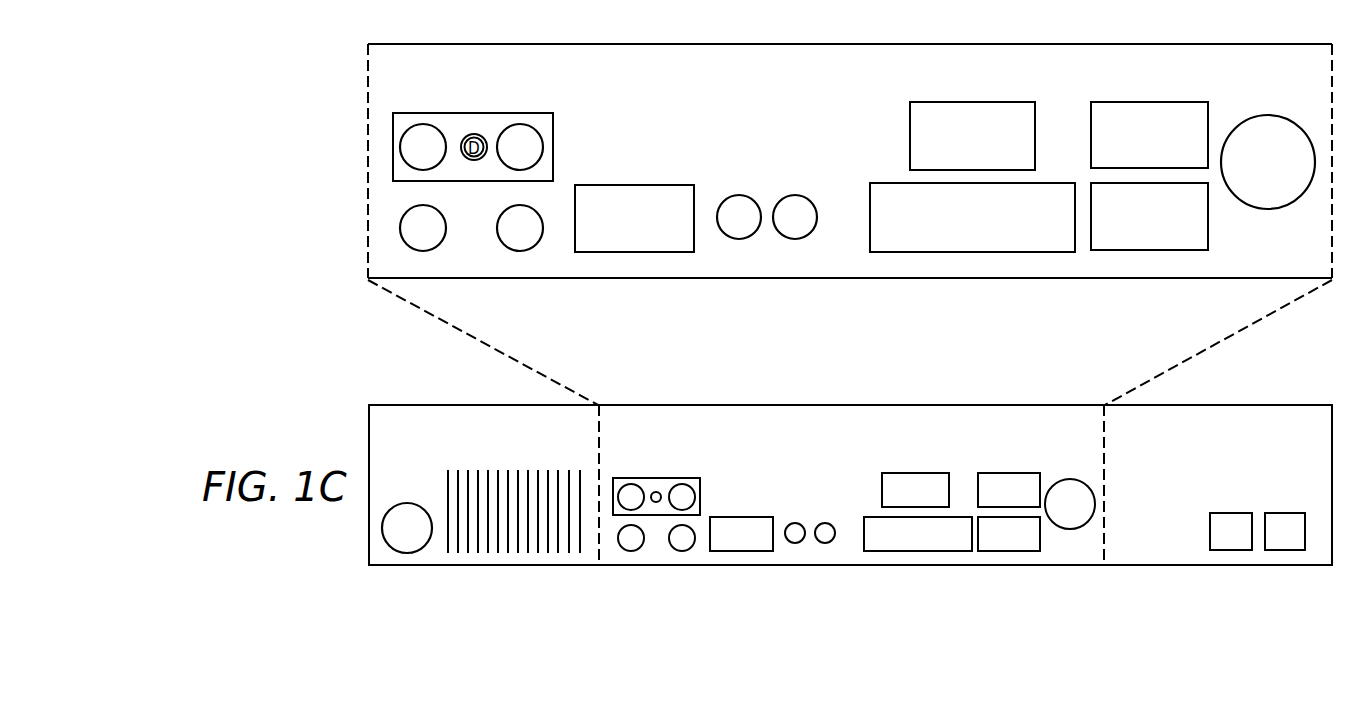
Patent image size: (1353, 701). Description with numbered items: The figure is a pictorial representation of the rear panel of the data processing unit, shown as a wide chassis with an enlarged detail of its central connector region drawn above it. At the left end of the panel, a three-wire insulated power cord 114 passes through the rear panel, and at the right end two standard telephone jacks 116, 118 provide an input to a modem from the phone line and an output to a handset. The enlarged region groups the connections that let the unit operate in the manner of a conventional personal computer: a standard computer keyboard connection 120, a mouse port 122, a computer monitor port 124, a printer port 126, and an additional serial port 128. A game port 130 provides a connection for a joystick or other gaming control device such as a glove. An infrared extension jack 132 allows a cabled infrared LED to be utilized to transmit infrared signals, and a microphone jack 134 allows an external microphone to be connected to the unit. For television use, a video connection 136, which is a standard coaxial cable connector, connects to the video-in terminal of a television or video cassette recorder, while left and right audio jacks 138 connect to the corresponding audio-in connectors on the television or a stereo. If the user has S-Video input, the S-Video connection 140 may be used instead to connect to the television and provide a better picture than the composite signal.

The power cord 114 is at (405, 504).
The telephone jack 116 is at (1230, 513).
The telephone jack 118 is at (1288, 513).
The computer keyboard connection 120 is at (1270, 116).
The mouse port 122 is at (1151, 102).
The computer monitor port 124 is at (976, 102).
The printer port 126 is at (884, 183).
The serial port 128 is at (1208, 232).
The game port 130 is at (635, 185).
The infrared extension jack 132 is at (735, 196).
The microphone jack 134 is at (797, 196).
The video connection 136 is at (520, 124).
The left and right audio jacks 138 is at (423, 124).
The S-Video connection 140 is at (504, 245).